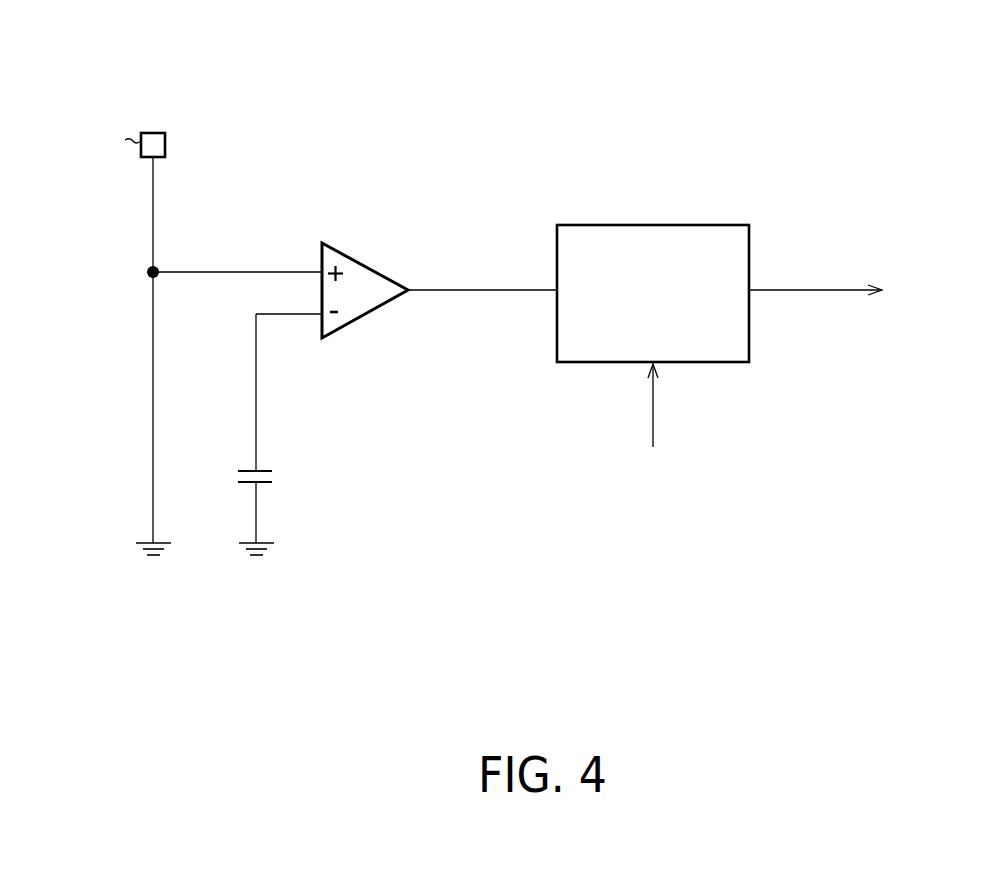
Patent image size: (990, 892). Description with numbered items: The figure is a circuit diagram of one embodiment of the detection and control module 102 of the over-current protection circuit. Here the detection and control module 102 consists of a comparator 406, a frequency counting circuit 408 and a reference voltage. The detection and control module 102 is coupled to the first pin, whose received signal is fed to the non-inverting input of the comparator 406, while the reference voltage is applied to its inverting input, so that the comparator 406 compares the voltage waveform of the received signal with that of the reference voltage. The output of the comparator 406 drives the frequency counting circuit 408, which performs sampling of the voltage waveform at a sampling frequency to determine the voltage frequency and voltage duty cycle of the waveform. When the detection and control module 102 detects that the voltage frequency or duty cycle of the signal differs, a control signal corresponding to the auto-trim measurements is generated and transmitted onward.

The detection and control module 102 is at (536, 314).
The comparator 406 is at (370, 264).
The frequency counting circuit 408 is at (647, 223).